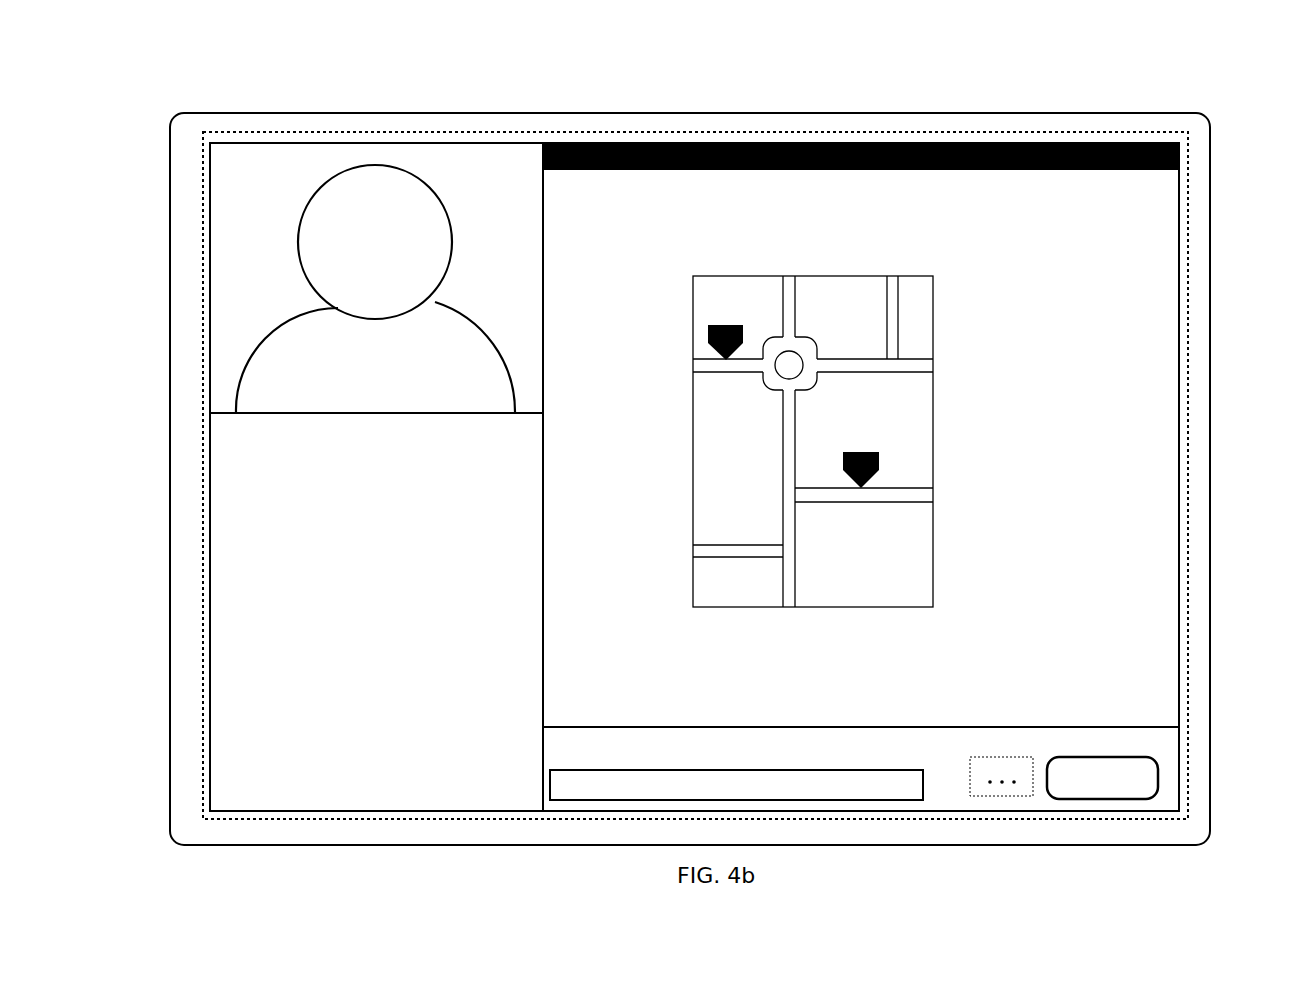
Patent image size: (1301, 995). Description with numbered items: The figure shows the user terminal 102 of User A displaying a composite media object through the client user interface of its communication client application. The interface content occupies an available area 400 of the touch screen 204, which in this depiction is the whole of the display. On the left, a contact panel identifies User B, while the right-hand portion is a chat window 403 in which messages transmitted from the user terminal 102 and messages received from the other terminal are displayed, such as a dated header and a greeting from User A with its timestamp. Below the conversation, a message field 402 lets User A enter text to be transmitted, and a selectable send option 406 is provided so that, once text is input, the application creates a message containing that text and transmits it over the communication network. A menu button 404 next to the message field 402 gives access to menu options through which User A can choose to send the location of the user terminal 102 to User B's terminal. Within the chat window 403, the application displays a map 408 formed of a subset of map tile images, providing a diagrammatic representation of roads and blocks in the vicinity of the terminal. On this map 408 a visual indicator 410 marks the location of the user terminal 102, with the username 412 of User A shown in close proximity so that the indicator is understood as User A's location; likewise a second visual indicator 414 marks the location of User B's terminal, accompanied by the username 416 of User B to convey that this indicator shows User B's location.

The user terminal 102 is at (827, 113).
The touch screen 204 is at (383, 142).
The available area 400 is at (1190, 303).
The message field 402 is at (877, 802).
The chat window 403 is at (1058, 544).
The menu button 404 is at (1010, 797).
The send option 406 is at (1158, 780).
The map 408 is at (933, 397).
The visual indicator 410 is at (855, 486).
The username 412 is at (888, 437).
The visual indicator 414 is at (708, 347).
The username 416 is at (697, 313).